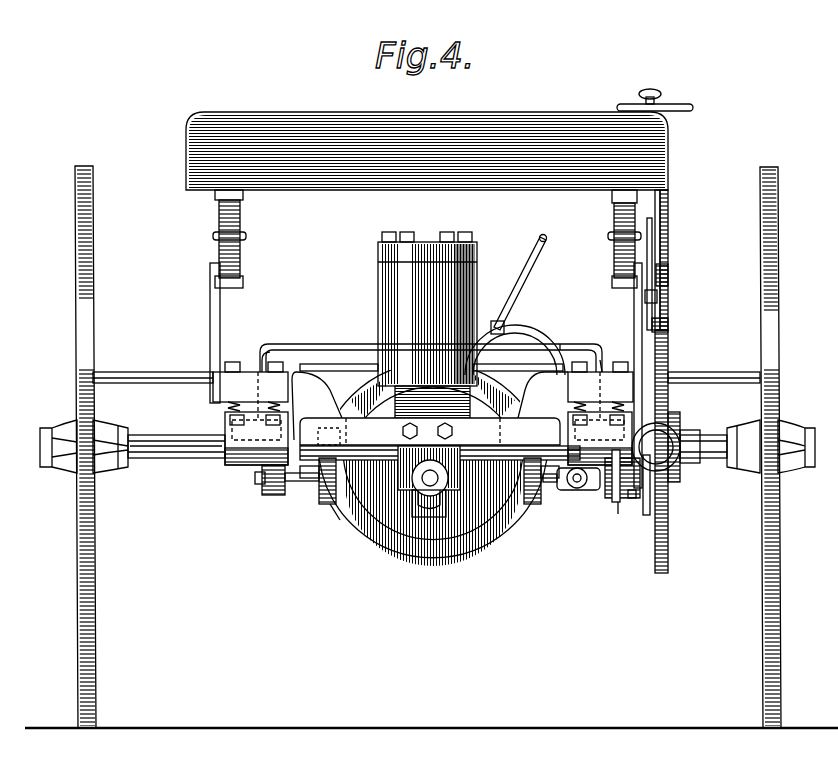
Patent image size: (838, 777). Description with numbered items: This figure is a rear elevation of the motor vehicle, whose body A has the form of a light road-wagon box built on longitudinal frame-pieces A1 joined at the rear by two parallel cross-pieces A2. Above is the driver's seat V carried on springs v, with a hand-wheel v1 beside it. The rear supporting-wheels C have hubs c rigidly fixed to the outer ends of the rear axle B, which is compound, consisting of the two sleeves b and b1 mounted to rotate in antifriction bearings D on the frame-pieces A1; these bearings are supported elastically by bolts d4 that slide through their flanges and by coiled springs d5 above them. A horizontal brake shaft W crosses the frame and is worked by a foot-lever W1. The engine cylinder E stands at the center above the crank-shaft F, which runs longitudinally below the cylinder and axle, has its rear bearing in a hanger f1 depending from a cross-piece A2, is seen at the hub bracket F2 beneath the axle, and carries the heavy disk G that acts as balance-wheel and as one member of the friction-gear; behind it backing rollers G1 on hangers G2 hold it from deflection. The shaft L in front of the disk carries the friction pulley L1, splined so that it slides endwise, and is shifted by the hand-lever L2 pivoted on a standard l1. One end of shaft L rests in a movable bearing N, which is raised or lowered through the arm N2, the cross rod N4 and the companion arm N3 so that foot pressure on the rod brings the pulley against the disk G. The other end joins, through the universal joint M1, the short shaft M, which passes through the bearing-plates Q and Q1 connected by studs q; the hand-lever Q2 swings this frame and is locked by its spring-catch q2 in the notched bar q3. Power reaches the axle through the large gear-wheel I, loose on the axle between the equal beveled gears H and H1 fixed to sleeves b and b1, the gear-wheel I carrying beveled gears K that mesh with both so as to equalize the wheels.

The seat V is at (427, 151).
The handle v1 is at (693, 108).
The springs v is at (244, 240).
The gear-wheel I is at (668, 566).
The hand-lever Q2 is at (652, 223).
The spring-catch q2 is at (668, 252).
The notched bar q3 is at (657, 296).
The rear supporting-wheels C is at (92, 318).
The hubs c is at (110, 416).
The rear axle B is at (172, 461).
The tubular part of axle b is at (156, 436).
The tubular part of axle b1 is at (705, 460).
The brake shaft W is at (170, 372).
The body A is at (210, 316).
The longitudinal frame-pieces A1 is at (423, 390).
The bolts d4 is at (275, 352).
The springs d5 is at (214, 424).
The bearings D is at (428, 438).
The foot-lever W1 is at (528, 336).
The arm N2 is at (262, 357).
The cross rod N4 is at (565, 350).
The arm N3 is at (602, 362).
The hand-lever L2 is at (528, 268).
The standard l1 is at (516, 318).
The cylinder E is at (378, 298).
The hanger f1 is at (432, 402).
The disk G is at (508, 560).
The cross-pieces A2 is at (430, 431).
The crank-shaft F is at (420, 490).
The hub bracket F2 is at (430, 517).
The hangers G2 is at (316, 492).
The backing rollers G1 is at (318, 508).
The friction wheel or pulley L1 is at (338, 528).
The shaft L is at (255, 478).
The movable bearing N is at (268, 496).
The universal joint M1 is at (580, 490).
The shaft M is at (600, 500).
The studs q is at (630, 500).
The bearing-plate Q1 is at (620, 523).
The bearing-plate Q is at (646, 515).
The beveled gear H is at (666, 418).
The beveled gear H1 is at (680, 430).
The beveled gears K is at (686, 440).